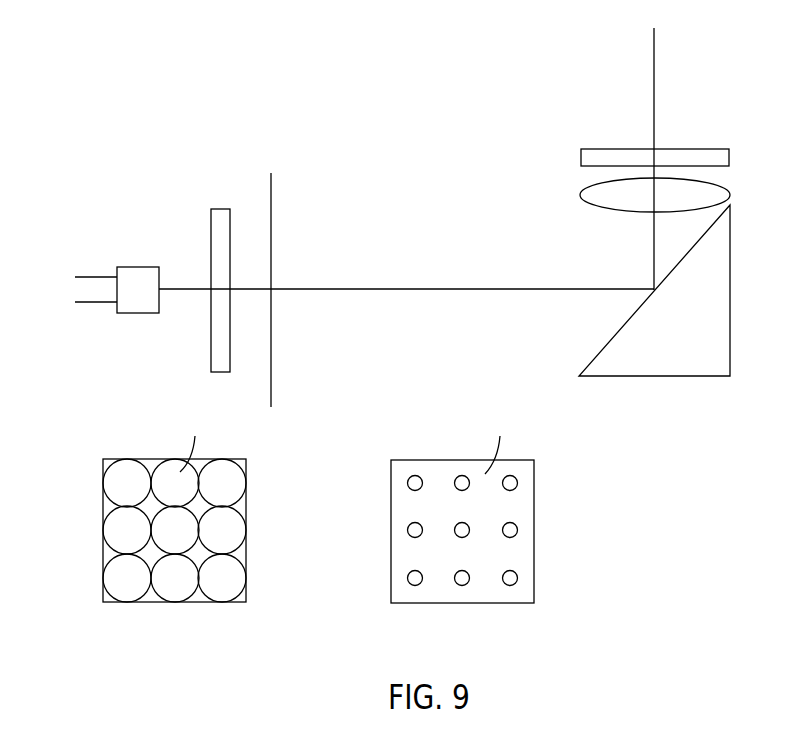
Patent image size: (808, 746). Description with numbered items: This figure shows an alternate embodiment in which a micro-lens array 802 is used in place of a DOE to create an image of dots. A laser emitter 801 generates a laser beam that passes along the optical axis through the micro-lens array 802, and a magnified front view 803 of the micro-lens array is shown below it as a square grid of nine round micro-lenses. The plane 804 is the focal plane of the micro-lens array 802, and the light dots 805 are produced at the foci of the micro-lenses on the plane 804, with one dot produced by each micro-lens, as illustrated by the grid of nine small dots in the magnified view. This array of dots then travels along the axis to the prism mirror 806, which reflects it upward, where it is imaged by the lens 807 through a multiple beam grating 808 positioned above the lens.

The laser emitter 801 is at (137, 313).
The micro-lens array 802 is at (211, 228).
The magnified front view of the micro-lens array 803 is at (173, 602).
The plane 804 is at (271, 197).
The light dots 805 is at (462, 603).
The prism mirror 806 is at (660, 376).
The lens 807 is at (727, 202).
The multiple beam grating 808 is at (714, 149).